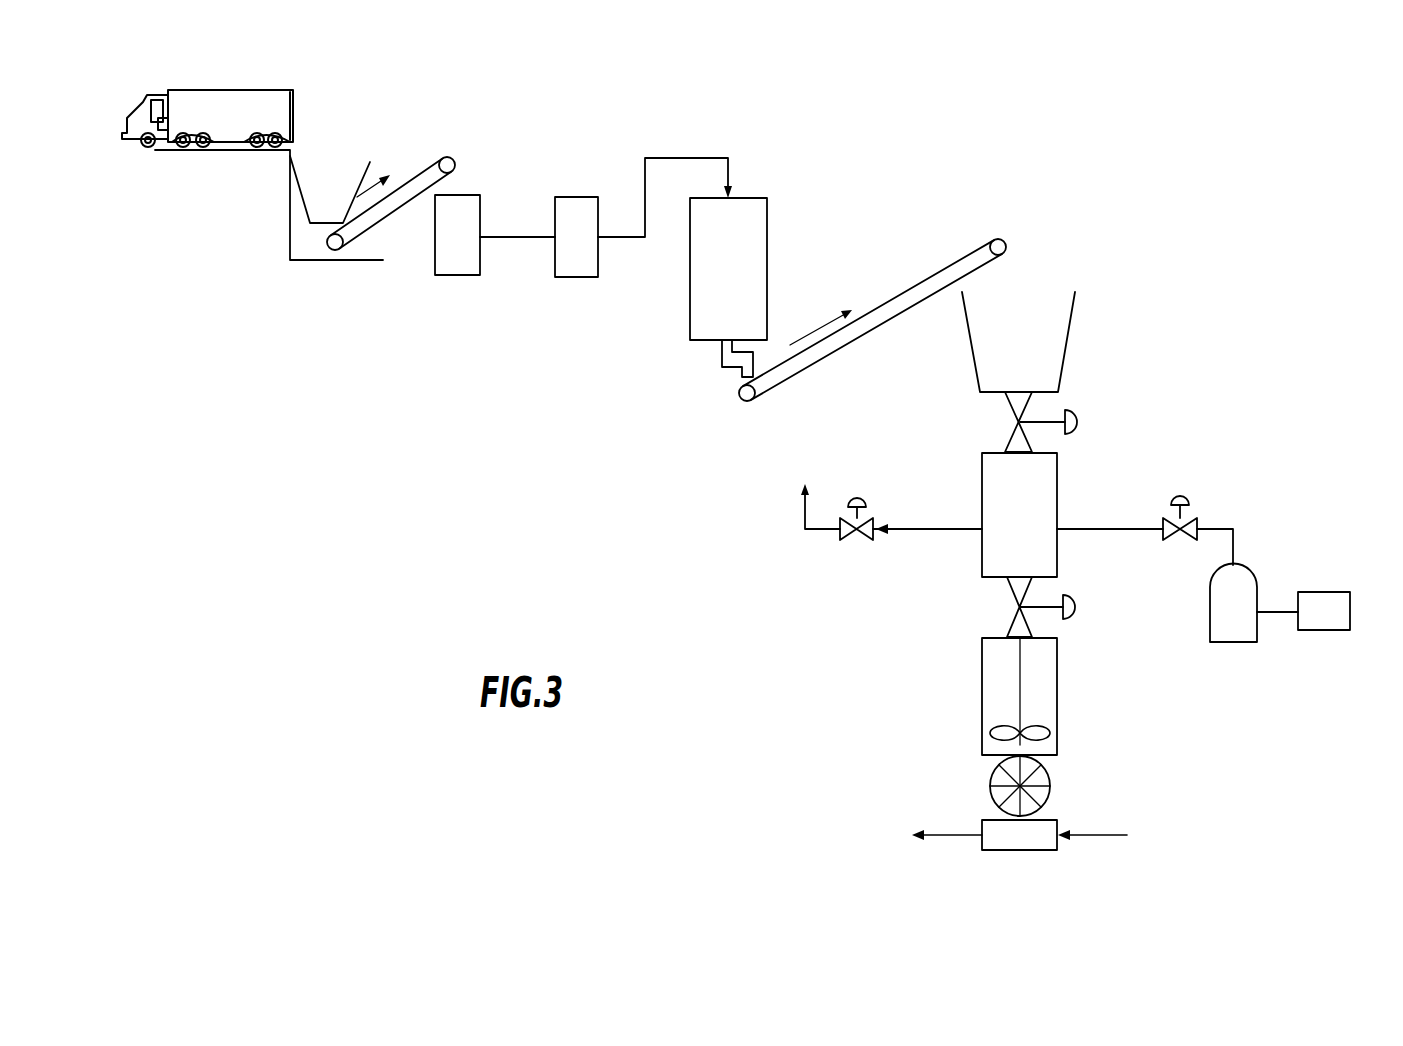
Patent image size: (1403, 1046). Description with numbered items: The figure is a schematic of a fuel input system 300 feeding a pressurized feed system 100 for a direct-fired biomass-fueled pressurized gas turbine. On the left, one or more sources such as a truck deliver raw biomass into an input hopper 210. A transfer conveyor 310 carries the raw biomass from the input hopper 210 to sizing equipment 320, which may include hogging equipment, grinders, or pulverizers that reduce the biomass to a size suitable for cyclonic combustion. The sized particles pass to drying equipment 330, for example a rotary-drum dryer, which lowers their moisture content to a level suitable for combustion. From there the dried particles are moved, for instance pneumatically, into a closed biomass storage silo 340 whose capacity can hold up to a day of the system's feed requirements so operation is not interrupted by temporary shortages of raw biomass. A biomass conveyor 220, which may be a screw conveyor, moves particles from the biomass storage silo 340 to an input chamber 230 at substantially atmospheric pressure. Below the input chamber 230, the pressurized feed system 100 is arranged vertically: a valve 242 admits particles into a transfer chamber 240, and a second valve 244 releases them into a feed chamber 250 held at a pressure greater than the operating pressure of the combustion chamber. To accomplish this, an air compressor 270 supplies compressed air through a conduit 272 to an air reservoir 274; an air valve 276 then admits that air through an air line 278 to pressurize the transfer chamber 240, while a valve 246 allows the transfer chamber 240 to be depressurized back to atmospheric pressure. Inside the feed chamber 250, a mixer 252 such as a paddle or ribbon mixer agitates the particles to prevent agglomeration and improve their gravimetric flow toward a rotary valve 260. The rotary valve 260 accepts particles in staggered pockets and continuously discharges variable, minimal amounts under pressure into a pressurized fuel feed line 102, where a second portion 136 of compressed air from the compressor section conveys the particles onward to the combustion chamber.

The pressurized feed system 100 is at (1214, 414).
The pressurized fuel feed line 102 is at (923, 833).
The second portion of the compressed air stream 136 is at (1119, 833).
The input hopper 210 is at (305, 208).
The biomass conveyor 220 is at (773, 394).
The input chamber 230 is at (1065, 356).
The transfer chamber 240 is at (1057, 478).
The valve 242 is at (1078, 425).
The valve 244 is at (1077, 607).
The valve 246 is at (858, 496).
The feed chamber 250 is at (1057, 660).
The mixer 252 is at (1040, 730).
The rotary valve 260 is at (1050, 778).
The air compressor 270 is at (1330, 631).
The conduit 272 is at (1277, 610).
The air reservoir 274 is at (1250, 570).
The air valve 276 is at (1182, 494).
The air line 278 is at (1095, 527).
The fuel input system 300 is at (515, 332).
The transfer conveyor 310 is at (367, 238).
The sizing equipment 320 is at (462, 195).
The drying equipment 330 is at (565, 197).
The biomass storage silo 340 is at (751, 198).